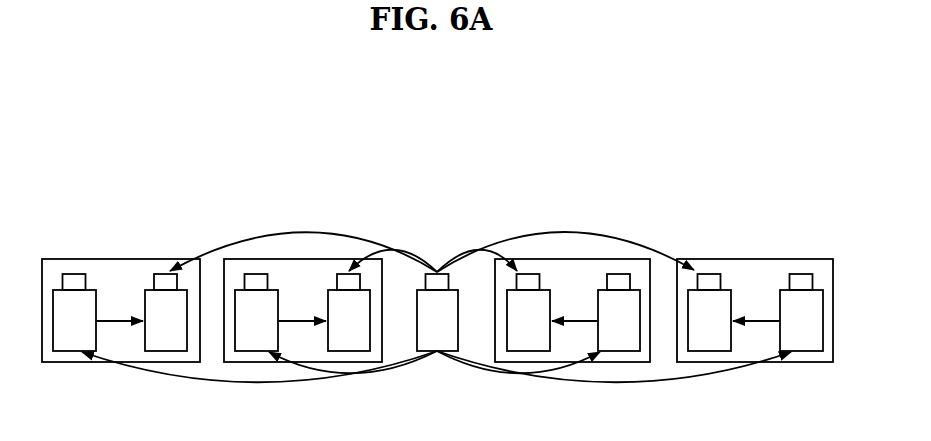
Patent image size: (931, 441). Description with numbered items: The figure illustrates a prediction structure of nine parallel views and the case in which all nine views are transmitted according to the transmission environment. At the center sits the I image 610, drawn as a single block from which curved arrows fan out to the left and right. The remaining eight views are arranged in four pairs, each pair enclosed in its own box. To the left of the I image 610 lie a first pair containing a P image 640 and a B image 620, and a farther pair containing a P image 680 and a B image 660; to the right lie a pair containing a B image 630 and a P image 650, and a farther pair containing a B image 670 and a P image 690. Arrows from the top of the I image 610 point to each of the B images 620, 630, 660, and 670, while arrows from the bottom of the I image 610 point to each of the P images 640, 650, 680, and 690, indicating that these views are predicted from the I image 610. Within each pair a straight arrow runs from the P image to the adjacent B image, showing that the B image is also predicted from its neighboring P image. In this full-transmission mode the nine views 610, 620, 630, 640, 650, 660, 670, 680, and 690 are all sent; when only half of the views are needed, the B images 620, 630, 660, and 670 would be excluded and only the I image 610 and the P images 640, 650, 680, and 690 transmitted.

The I image view 610 is at (437, 273).
The B image view 620 is at (345, 273).
The B image view 630 is at (527, 273).
The P image view 640 is at (252, 273).
The P image view 650 is at (615, 273).
The B image view 660 is at (163, 273).
The B image view 670 is at (707, 273).
The P image view 680 is at (70, 273).
The P image view 690 is at (798, 273).